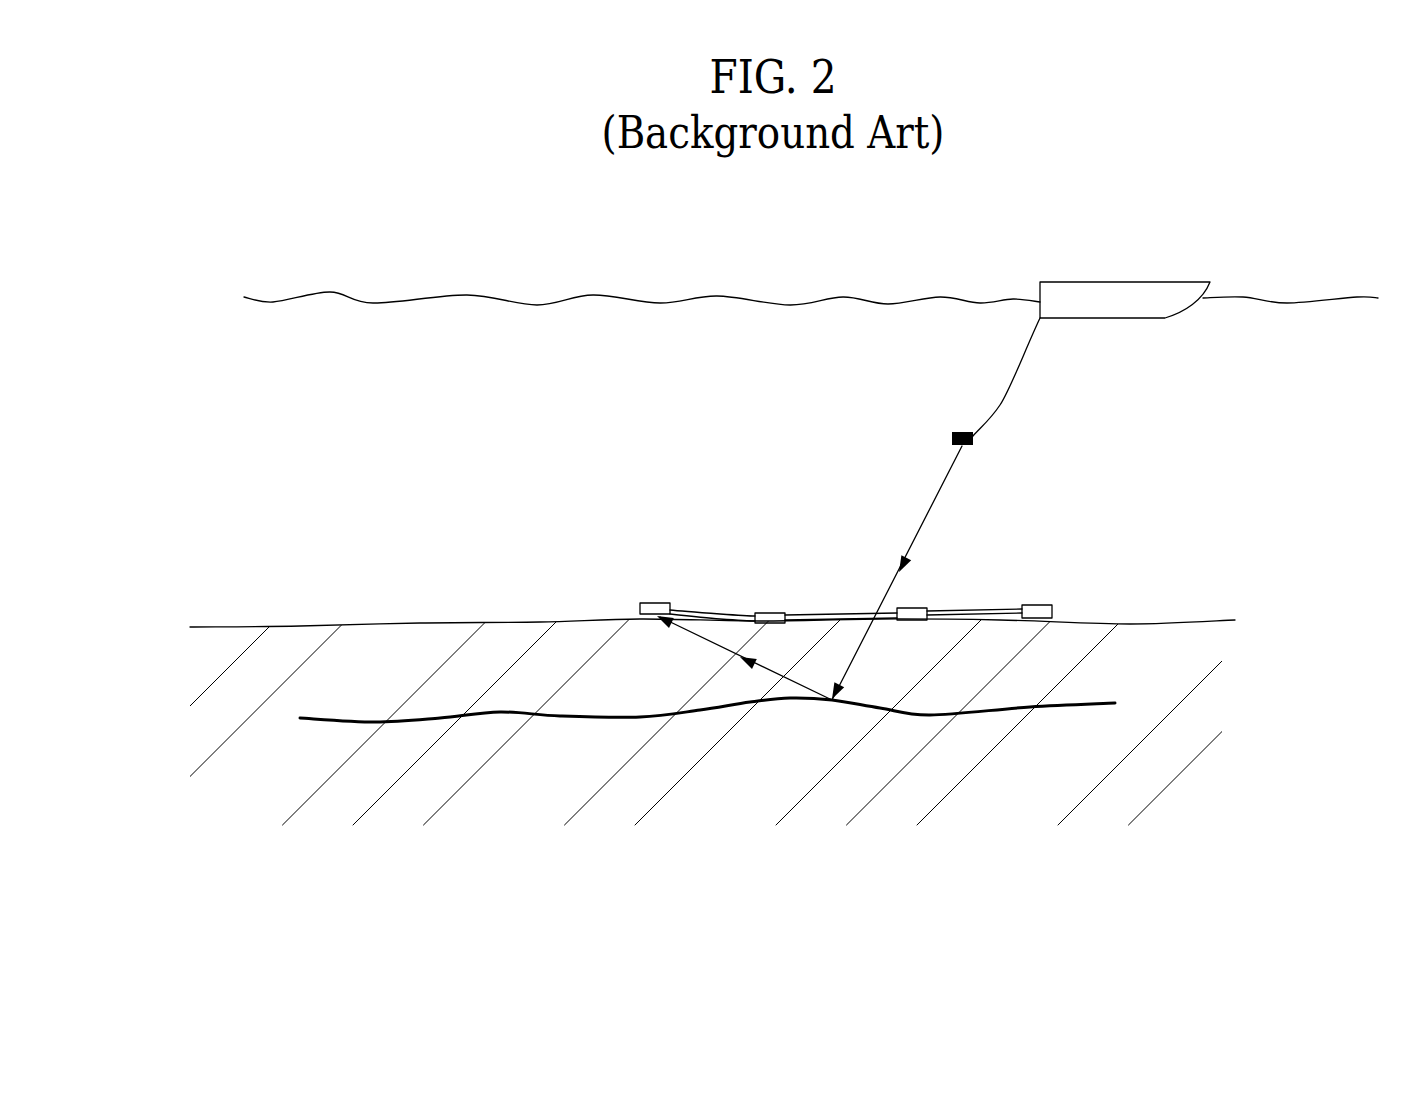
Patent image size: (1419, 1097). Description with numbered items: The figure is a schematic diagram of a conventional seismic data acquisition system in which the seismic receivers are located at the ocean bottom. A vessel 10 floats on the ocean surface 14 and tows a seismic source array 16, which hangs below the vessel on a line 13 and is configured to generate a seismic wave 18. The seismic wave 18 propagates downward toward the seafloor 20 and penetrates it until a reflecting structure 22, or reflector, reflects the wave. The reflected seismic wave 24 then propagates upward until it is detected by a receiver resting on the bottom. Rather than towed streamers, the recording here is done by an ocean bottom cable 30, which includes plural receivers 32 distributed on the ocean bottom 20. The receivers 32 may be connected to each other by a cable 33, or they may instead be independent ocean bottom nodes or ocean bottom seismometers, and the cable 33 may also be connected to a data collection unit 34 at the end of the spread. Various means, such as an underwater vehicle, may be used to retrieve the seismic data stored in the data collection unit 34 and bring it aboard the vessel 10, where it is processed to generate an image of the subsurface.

The vessel 10 is at (1191, 249).
The tow cable 13 is at (946, 384).
The ocean surface 14 is at (330, 292).
The seismic source array 16 is at (970, 447).
The seismic wave 18 is at (935, 497).
The seafloor 20 is at (1180, 624).
The reflecting structure 22 is at (376, 720).
The reflected seismic wave 24 is at (705, 634).
The ocean bottom cable 30 is at (738, 592).
The receivers 32 is at (652, 603).
The cable 33 is at (977, 612).
The data collection unit 34 is at (1040, 605).